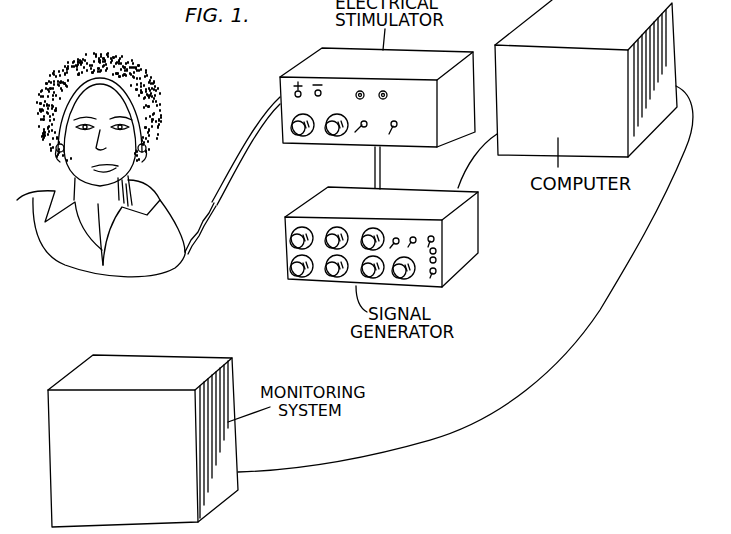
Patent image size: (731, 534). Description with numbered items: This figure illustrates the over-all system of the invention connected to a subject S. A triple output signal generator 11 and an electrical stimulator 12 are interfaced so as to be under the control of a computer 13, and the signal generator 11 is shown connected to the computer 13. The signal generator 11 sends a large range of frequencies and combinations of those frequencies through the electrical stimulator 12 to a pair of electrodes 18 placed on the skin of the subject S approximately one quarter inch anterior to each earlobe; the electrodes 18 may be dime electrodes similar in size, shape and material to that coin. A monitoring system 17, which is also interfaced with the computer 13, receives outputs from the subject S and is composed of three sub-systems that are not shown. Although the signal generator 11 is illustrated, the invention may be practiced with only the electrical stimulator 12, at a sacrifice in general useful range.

The signal generator 11 is at (470, 235).
The electrical stimulator 12 is at (303, 66).
The computer 13 is at (647, 125).
The monitoring system 17 is at (165, 362).
The electrodes 18 is at (50, 158).
The subject S is at (168, 186).